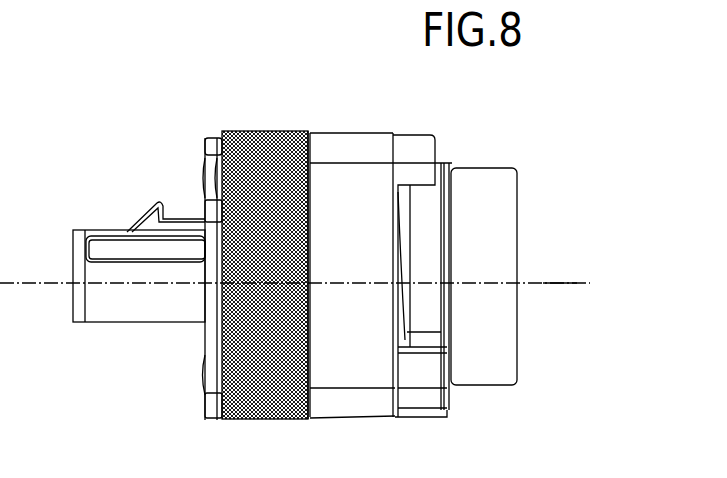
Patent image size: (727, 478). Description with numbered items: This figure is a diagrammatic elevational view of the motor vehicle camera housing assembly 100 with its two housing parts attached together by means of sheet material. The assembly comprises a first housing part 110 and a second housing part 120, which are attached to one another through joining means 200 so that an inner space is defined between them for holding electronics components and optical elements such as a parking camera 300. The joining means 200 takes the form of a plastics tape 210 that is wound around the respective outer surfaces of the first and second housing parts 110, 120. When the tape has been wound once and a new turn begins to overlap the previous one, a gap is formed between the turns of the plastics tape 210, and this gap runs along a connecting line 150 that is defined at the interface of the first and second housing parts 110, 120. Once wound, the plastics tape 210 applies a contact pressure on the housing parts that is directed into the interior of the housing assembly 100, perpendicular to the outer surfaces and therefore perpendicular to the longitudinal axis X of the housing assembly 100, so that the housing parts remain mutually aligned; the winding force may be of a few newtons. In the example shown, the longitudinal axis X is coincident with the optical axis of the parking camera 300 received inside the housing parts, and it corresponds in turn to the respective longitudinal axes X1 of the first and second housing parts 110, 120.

The motor vehicle camera housing assembly 100 is at (153, 122).
The first housing part 110 is at (348, 131).
The second housing part 120 is at (214, 400).
The connecting line 150 is at (305, 133).
The joining means 200 is at (237, 119).
The plastics tape 210 is at (276, 128).
The parking camera 300 is at (482, 178).
The longitudinal axis X is at (3, 283).
The longitudinal axis of first housing part X1 is at (558, 279).